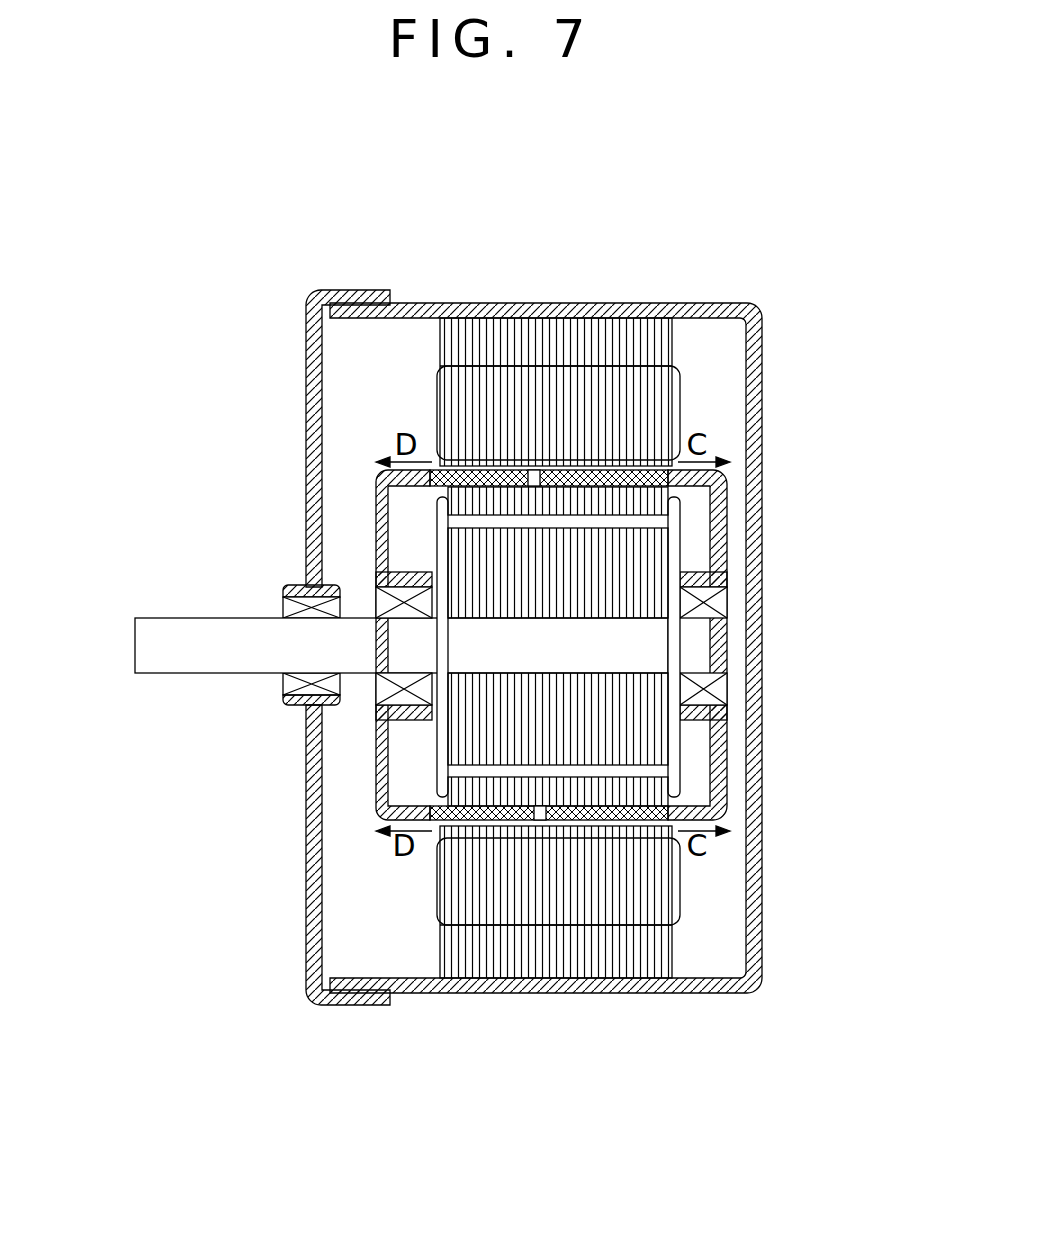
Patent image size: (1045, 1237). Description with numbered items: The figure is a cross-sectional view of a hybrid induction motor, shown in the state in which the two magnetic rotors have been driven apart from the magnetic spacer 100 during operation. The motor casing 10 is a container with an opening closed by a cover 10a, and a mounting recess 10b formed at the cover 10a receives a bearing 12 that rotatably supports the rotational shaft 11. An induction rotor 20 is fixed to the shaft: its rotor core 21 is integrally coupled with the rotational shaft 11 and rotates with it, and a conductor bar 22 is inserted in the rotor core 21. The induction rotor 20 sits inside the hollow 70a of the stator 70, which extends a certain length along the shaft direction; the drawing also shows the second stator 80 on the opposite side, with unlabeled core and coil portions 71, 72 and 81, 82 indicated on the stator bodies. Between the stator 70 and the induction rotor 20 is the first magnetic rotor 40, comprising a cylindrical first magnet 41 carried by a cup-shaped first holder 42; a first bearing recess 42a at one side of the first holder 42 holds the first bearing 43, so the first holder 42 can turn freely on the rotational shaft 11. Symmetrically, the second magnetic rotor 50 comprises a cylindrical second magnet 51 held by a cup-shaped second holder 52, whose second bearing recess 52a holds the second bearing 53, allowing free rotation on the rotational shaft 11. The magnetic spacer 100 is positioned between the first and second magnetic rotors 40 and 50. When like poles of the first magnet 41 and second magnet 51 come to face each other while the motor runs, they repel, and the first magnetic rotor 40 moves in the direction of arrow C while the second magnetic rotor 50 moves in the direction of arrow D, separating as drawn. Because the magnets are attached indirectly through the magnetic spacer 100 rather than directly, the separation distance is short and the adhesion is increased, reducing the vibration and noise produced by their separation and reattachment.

The motor casing 10 is at (438, 647).
The cover 10a is at (305, 462).
The mounting recess 10b is at (273, 677).
The rotational shaft 11 is at (148, 643).
The bearing 12 is at (283, 603).
The induction rotor 20 is at (678, 646).
The rotor core 21 is at (645, 599).
The conductor bar 22 is at (645, 521).
The first magnetic rotor 40 is at (683, 656).
The first magnet 41 is at (646, 824).
The first holder 42 is at (718, 765).
The first bearing recess 42a is at (706, 666).
The first bearing 43 is at (716, 689).
The second magnetic rotor 50 is at (410, 676).
The second magnet 51 is at (400, 826).
The second holder 52 is at (378, 780).
The second bearing recess 52a is at (372, 596).
The second bearing 53 is at (378, 716).
The stator 70 is at (678, 937).
The hollow 70a is at (606, 815).
The stator core 71 is at (683, 951).
The stator coil 72 is at (690, 909).
The second stator 80 is at (438, 667).
The stator core 81 is at (436, 950).
The stator coil 82 is at (424, 906).
The magnetic spacer 100 is at (548, 470).